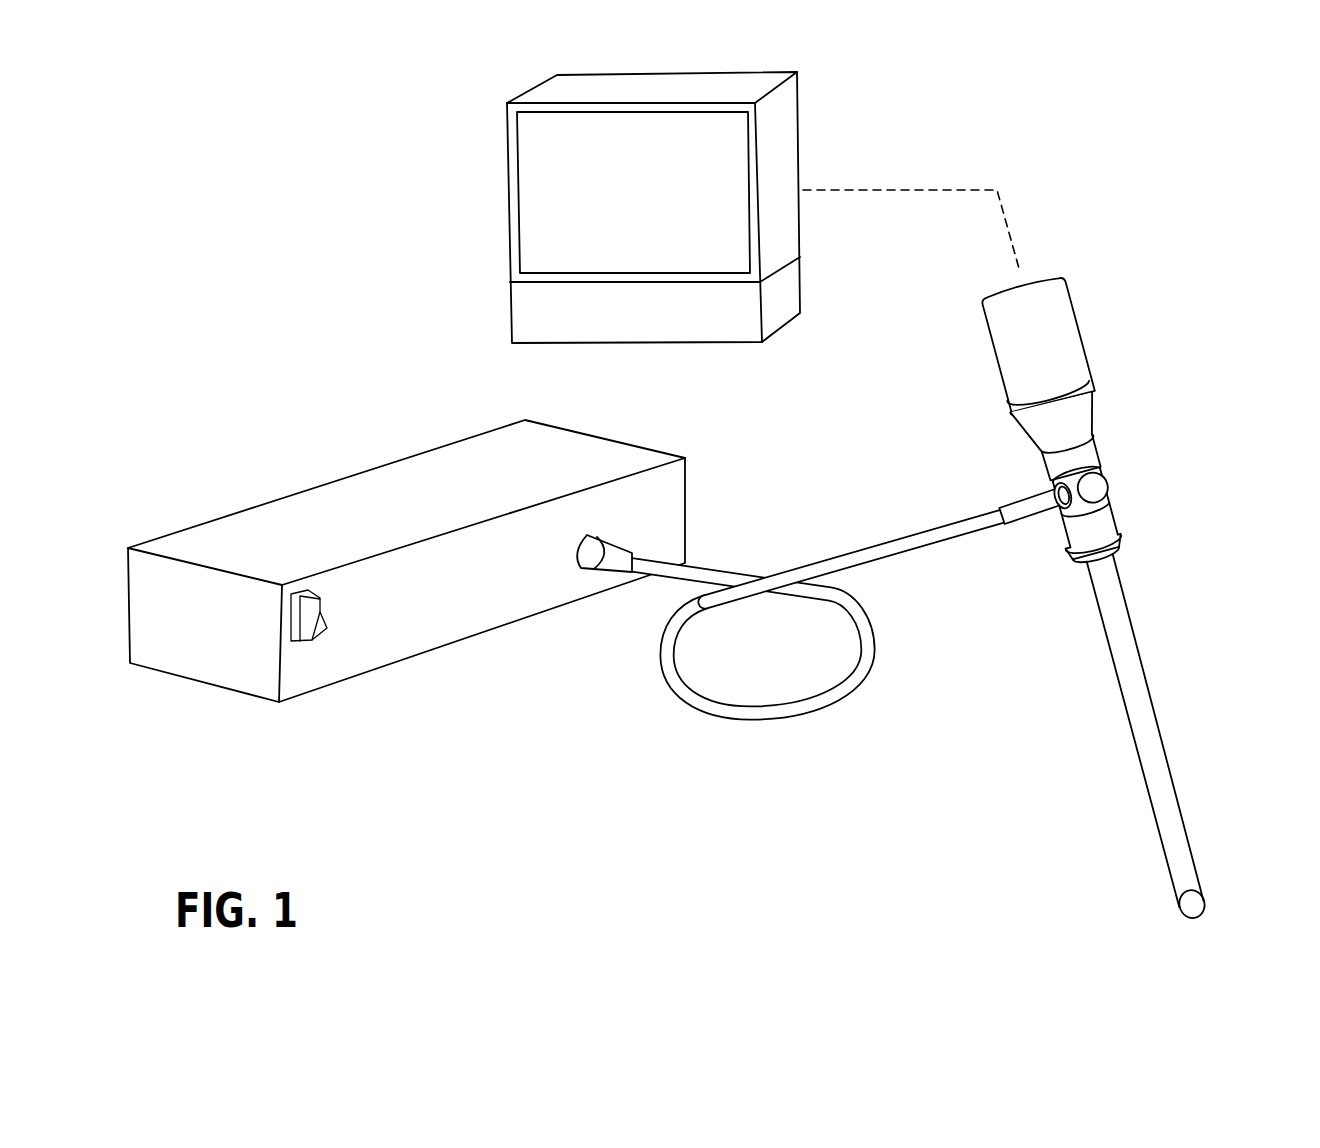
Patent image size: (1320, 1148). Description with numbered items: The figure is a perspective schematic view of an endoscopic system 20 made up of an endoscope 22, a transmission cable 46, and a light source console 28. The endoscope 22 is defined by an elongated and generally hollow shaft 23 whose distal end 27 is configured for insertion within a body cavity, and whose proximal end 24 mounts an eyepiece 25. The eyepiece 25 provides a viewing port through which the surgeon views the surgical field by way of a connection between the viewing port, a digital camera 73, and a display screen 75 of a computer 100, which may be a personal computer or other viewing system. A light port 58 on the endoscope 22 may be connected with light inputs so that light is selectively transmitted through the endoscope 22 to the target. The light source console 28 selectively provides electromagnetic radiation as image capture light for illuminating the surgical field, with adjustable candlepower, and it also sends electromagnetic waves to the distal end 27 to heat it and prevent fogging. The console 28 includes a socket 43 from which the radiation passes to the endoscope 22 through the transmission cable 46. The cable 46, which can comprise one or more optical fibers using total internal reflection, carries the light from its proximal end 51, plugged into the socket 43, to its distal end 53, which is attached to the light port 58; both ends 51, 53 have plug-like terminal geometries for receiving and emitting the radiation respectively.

The endoscopic system 20 is at (701, 496).
The endoscope 22 is at (1112, 597).
The hollow shaft 23 is at (1162, 770).
The proximal end 24 is at (1118, 530).
The eyepiece 25 is at (1075, 407).
The distal end 27 is at (1190, 893).
The light source console 28 is at (342, 473).
The socket 43 is at (651, 585).
The transmission cable 46 is at (803, 636).
The proximal end 51 is at (608, 555).
The distal end 53 is at (1028, 512).
The light port 58 is at (1053, 483).
The digital camera 73 is at (1058, 328).
The display screen 75 is at (598, 239).
The computer 100 is at (732, 330).